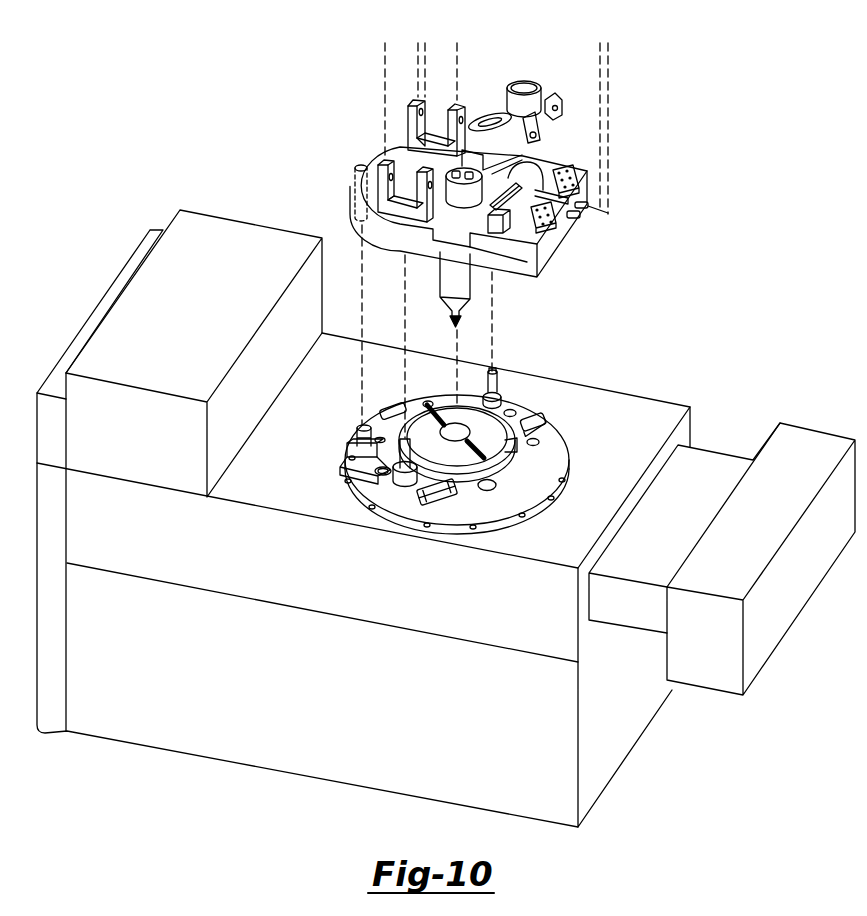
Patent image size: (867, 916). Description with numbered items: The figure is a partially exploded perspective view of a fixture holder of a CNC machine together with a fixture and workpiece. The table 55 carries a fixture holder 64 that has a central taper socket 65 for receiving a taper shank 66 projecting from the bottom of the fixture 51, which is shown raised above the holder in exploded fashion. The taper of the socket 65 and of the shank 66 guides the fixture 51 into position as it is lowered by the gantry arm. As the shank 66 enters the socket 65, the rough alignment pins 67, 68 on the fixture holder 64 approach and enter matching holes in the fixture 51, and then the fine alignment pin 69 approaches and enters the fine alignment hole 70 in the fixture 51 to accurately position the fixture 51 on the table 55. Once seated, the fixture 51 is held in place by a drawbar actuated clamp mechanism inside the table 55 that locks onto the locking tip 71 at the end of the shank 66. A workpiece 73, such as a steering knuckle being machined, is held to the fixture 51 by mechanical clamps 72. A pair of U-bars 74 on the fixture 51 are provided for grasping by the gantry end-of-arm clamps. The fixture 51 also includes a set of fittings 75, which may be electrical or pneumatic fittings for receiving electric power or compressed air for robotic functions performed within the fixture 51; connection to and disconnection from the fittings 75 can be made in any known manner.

The fixture 51 is at (350, 205).
The table 55 is at (136, 772).
The fixture holder 64 is at (570, 456).
The central taper socket 65 is at (462, 428).
The taper shank 66 is at (472, 284).
The rough alignment pin 67 is at (500, 387).
The rough alignment pin 68 is at (385, 473).
The fine alignment pin 69 is at (373, 427).
The fine alignment hole 70 is at (356, 168).
The locking tip 71 is at (447, 310).
The mechanical clamp 72 is at (465, 190).
The workpiece 73 is at (527, 80).
The U-bar 74 is at (372, 163).
The fittings 75 is at (579, 230).